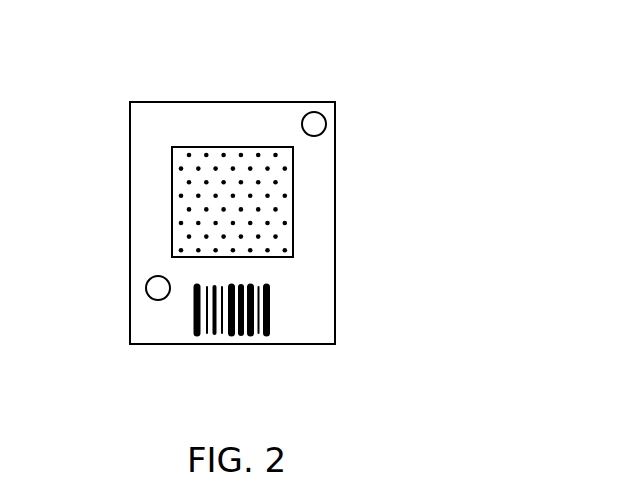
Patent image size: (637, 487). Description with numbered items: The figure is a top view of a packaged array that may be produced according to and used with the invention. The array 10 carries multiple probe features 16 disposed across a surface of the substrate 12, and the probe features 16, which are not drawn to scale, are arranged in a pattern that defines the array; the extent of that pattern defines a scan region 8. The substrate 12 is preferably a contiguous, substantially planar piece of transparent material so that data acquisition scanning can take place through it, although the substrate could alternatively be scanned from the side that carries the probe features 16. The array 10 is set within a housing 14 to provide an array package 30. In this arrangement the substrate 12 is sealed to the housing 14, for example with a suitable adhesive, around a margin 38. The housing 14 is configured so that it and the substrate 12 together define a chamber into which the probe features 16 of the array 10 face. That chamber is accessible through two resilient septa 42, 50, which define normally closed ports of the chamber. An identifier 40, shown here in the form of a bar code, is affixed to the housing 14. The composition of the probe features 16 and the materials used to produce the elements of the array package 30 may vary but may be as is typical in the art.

The scan region 8 is at (292, 192).
The array 10 is at (233, 137).
The substrate 12 is at (268, 150).
The housing 14 is at (318, 213).
The probe features 16 is at (284, 256).
The array package 30 is at (366, 263).
The margin 38 is at (172, 201).
The identifier 40 is at (201, 332).
The resilient septum 42 is at (158, 288).
The resilient septum 50 is at (305, 113).